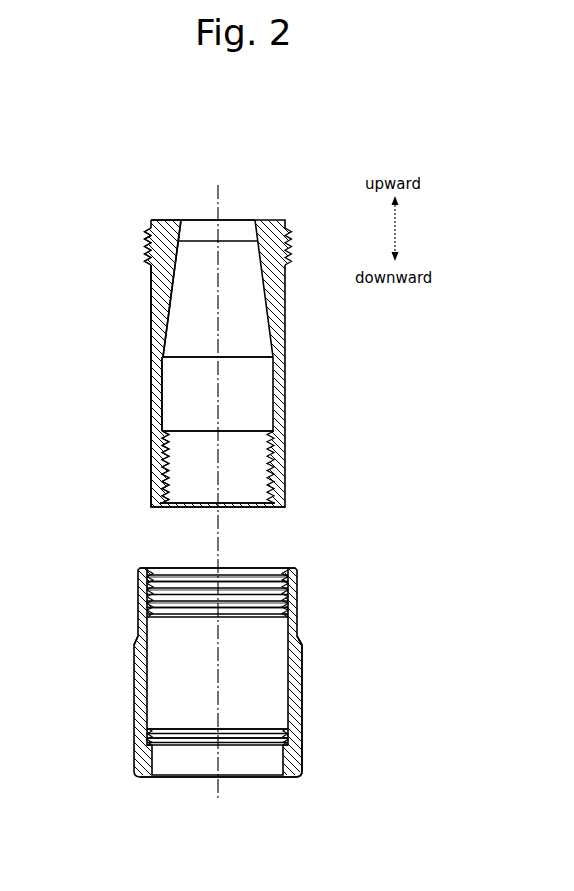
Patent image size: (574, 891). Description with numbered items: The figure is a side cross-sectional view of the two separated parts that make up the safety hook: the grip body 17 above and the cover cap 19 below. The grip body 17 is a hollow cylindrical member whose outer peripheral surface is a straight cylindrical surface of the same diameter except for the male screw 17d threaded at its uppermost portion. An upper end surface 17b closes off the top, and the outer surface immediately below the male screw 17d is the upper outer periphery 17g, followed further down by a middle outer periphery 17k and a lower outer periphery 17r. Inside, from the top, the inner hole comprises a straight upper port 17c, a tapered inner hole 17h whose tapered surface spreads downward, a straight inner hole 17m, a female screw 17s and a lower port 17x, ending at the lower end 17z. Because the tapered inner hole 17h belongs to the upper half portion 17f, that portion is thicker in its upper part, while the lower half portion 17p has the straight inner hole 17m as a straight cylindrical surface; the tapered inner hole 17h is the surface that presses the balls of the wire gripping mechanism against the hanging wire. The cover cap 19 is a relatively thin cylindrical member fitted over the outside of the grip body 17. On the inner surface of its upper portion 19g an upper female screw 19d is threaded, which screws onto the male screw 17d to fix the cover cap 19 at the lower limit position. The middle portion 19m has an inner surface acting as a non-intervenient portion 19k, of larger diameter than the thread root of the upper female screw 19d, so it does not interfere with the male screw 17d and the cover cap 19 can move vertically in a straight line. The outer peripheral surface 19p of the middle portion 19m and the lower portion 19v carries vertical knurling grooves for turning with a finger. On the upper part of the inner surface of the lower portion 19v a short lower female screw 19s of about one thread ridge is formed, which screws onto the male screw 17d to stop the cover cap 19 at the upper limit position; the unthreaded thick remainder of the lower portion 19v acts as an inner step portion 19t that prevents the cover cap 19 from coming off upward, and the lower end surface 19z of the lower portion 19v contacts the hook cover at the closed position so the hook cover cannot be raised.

The grip body 17 is at (286, 345).
The upper port 17c is at (192, 220).
The upper end surface 17b is at (156, 214).
The male screw 17d is at (146, 243).
The upper half portion 17f is at (162, 273).
The upper outer periphery 17g is at (151, 297).
The tapered inner hole 17h is at (172, 300).
The middle outer periphery 17k is at (151, 356).
The straight inner hole 17m is at (168, 385).
The lower half portion 17p is at (155, 427).
The lower outer periphery 17r is at (151, 459).
The female screw 17s is at (162, 470).
The lower end 17z is at (153, 507).
The lower port 17x is at (163, 510).
The cover cap 19 is at (131, 663).
The upper female screw (first female screw) 19d is at (297, 573).
The upper portion 19g is at (294, 595).
The non-intervenient portion 19k is at (288, 633).
The middle portion 19m is at (302, 683).
The outer peripheral surface 19p is at (302, 715).
The lower female screw (second female screw) 19s is at (265, 745).
The inner step portion 19t is at (302, 762).
The lower portion 19v is at (298, 775).
The lower end surface 19z is at (293, 778).